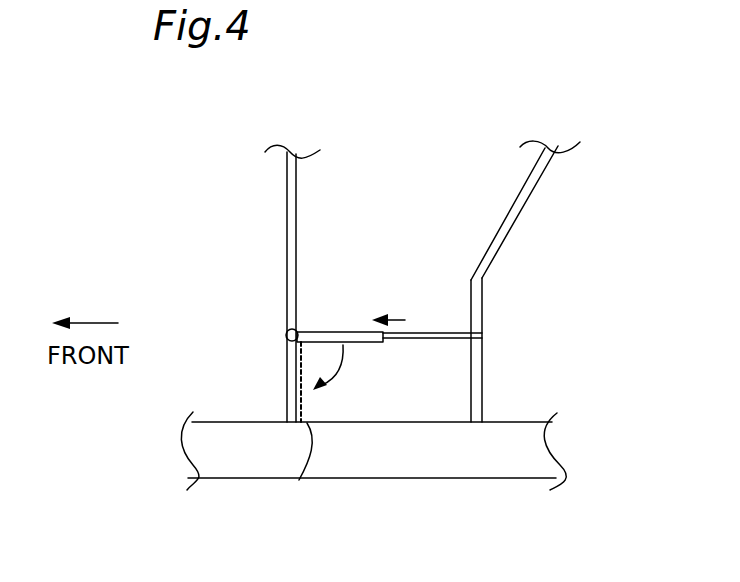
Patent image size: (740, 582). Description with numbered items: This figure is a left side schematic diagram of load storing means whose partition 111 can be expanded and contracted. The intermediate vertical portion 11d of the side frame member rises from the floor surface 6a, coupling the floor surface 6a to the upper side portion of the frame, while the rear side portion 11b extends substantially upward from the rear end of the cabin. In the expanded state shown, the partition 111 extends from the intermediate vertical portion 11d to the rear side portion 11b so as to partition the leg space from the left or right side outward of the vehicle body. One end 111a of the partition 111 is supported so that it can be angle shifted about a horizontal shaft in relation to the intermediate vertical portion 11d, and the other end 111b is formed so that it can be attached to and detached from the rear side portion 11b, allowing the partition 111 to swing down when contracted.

The intermediate vertical portion 11d is at (290, 214).
The rear side portion 11b is at (522, 203).
The other end of partition 111b is at (482, 333).
The partition 111 is at (357, 334).
The one end of partition 111a is at (286, 334).
The floor surface 6a is at (299, 480).